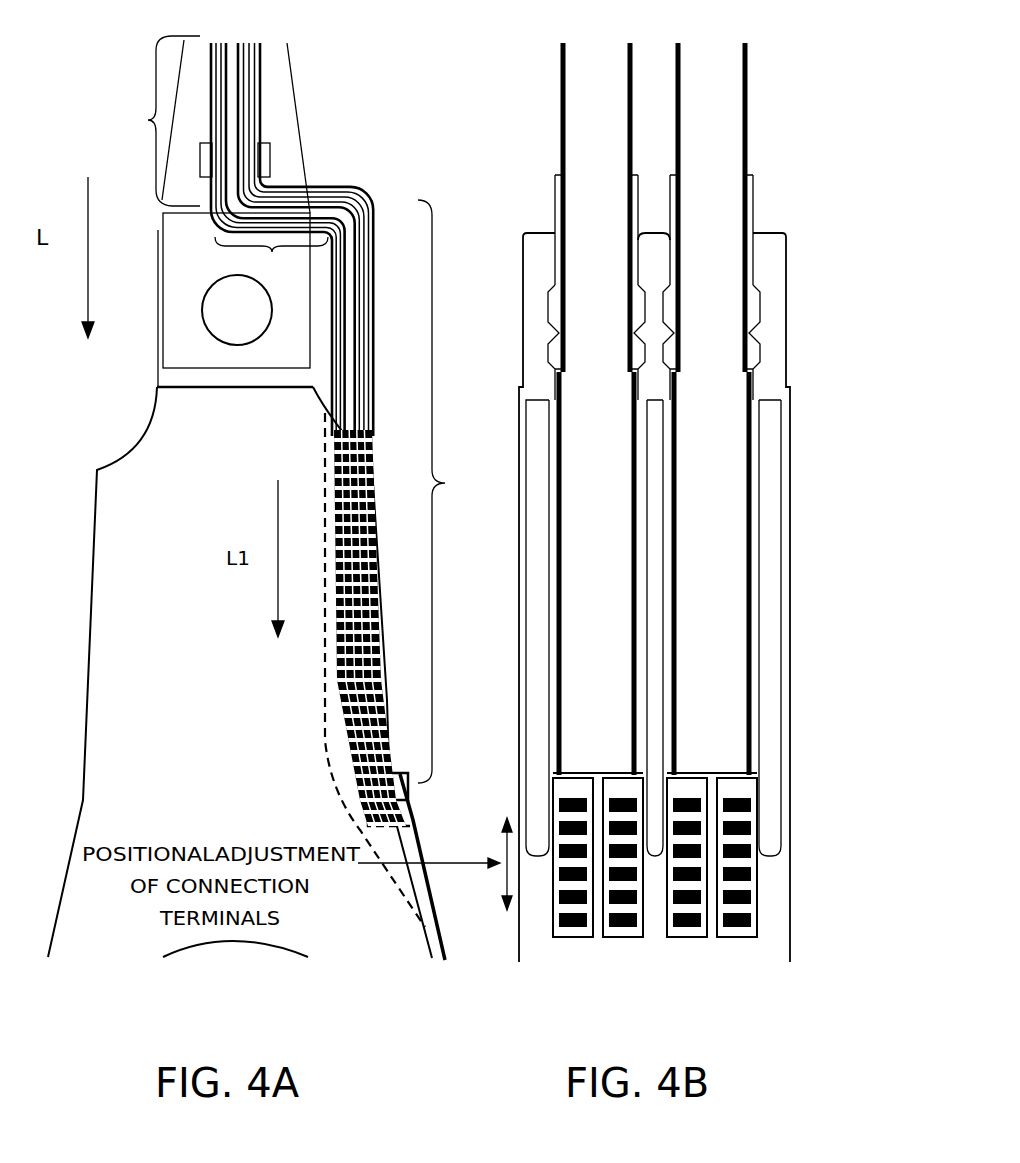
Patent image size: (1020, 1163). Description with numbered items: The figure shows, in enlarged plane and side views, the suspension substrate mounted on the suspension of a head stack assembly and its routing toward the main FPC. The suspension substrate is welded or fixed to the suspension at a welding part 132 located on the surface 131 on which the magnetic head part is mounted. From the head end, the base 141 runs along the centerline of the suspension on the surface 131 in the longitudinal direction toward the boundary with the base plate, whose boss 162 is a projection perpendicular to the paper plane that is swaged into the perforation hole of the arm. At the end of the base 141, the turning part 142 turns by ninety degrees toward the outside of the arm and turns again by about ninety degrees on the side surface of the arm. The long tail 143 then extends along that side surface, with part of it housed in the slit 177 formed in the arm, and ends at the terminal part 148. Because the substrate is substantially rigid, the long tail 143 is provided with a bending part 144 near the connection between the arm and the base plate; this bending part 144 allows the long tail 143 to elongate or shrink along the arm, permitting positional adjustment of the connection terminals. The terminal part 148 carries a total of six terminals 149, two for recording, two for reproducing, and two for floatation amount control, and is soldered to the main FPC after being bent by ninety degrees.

In FIG. 4A, the surface 131 is at (275, 87).
In FIG. 4A, the welding part 132 is at (263, 158).
In FIG. 4A, the base 141 is at (148, 120).
In FIG. 4A, the turning part 142 is at (271, 260).
In FIG. 4A, the long tail 143 is at (459, 491).
In FIG. 4B, the bending part 144 is at (540, 318).
In FIG. 4B, the terminal part 148 is at (743, 962).
In FIG. 4B, the terminals 149 is at (750, 892).
In FIG. 4A, the boss 162 is at (203, 320).
In FIG. 4A, the slit 177 is at (333, 738).
In FIG. 4B, the slit 177 is at (527, 512).